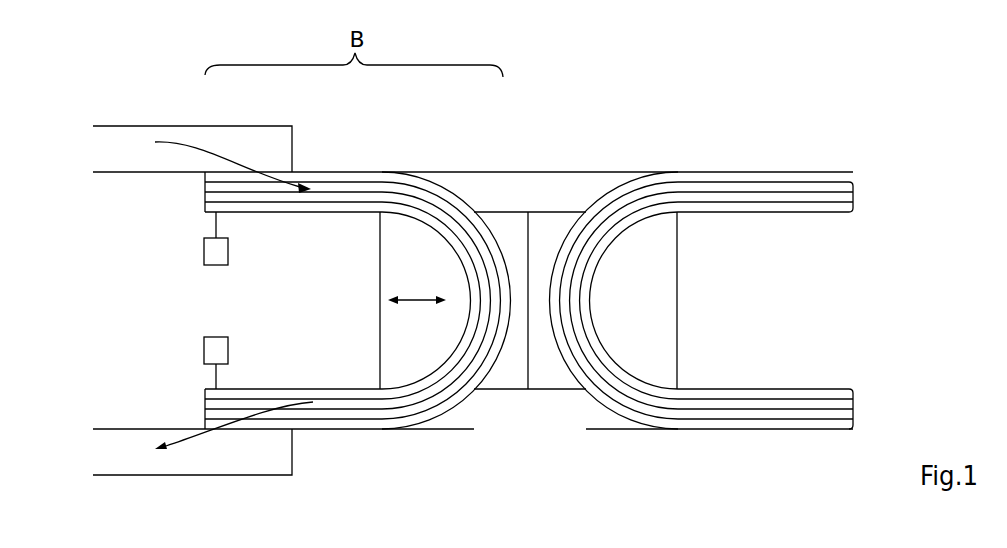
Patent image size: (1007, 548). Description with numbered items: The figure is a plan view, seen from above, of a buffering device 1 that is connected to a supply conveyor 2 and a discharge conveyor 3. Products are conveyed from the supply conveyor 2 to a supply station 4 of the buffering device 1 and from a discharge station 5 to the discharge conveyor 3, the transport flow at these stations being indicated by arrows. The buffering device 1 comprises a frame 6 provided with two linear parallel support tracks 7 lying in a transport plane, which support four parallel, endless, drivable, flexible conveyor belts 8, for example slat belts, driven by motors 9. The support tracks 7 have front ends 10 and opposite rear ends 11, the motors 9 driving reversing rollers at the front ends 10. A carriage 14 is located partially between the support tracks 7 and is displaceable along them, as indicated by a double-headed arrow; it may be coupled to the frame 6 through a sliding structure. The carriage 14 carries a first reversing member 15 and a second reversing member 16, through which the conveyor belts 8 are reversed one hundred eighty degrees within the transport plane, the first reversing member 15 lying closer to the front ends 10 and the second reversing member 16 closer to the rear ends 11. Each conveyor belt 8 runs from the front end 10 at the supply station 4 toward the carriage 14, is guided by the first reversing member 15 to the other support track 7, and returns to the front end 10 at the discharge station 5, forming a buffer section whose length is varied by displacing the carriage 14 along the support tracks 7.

The buffering device 1 is at (684, 154).
The supply conveyor 2 is at (208, 135).
The discharge conveyor 3 is at (207, 463).
The supply station 4 is at (235, 187).
The discharge station 5 is at (252, 425).
The frame 6 is at (498, 172).
The support tracks 7 is at (532, 188).
The conveyor belts 8 is at (368, 392).
The motors 9 is at (213, 337).
The front ends 10 is at (202, 185).
The rear ends 11 is at (853, 200).
The carriage 14 is at (493, 390).
The first reversing member 15 is at (465, 243).
The second reversing member 16 is at (577, 253).